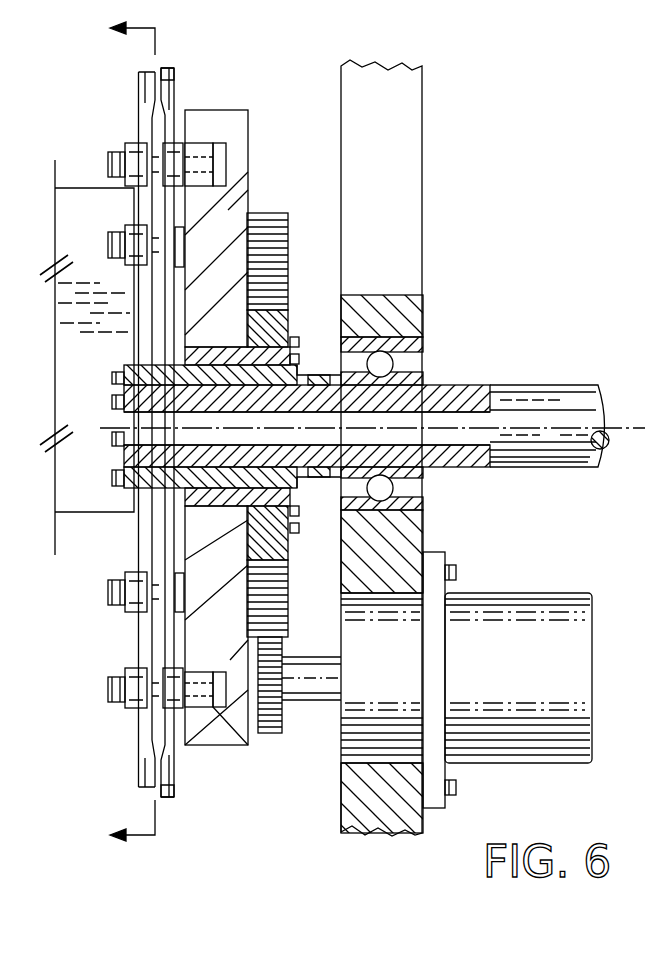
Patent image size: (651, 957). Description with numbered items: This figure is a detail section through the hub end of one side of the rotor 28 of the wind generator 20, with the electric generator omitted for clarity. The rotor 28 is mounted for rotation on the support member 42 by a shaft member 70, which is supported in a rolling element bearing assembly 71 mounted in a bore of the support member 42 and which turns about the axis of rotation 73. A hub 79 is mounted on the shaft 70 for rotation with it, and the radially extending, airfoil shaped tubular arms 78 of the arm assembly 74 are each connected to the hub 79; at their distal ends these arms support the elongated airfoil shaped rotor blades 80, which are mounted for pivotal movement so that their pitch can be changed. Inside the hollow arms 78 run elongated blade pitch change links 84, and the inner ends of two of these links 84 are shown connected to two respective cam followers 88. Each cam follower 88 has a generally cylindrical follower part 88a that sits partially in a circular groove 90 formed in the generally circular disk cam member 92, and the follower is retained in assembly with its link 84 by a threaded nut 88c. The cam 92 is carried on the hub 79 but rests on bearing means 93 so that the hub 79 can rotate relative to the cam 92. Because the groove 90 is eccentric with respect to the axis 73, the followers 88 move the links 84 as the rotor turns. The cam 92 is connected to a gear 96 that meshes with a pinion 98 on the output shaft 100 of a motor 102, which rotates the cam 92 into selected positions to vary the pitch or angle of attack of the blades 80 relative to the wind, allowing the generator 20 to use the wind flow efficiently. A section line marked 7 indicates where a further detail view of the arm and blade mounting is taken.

The section line 7- 7 is at (122, 432).
The generator 20 is at (478, 117).
The rotor 28 is at (184, 70).
The support member 42 is at (423, 530).
The shaft member 70 is at (477, 385).
The rolling element bearing assembly 71 is at (415, 345).
The axis of rotation 73 is at (443, 427).
The arm assembly 74 is at (184, 786).
The arm 78 is at (140, 118).
The hub 79 is at (230, 482).
The rotor blade 80 is at (90, 186).
The blade pitch change link 84 is at (176, 96).
The cam follower 88 is at (192, 138).
The follower part 88a is at (190, 220).
The threaded nut 88c is at (118, 705).
The circular groove 90 is at (207, 168).
The disk cam member 92 is at (289, 232).
The bearing means 93 is at (203, 350).
The gear 96 is at (288, 290).
The pinion 98 is at (280, 733).
The output shaft 100 is at (330, 657).
The motor 102 is at (513, 594).